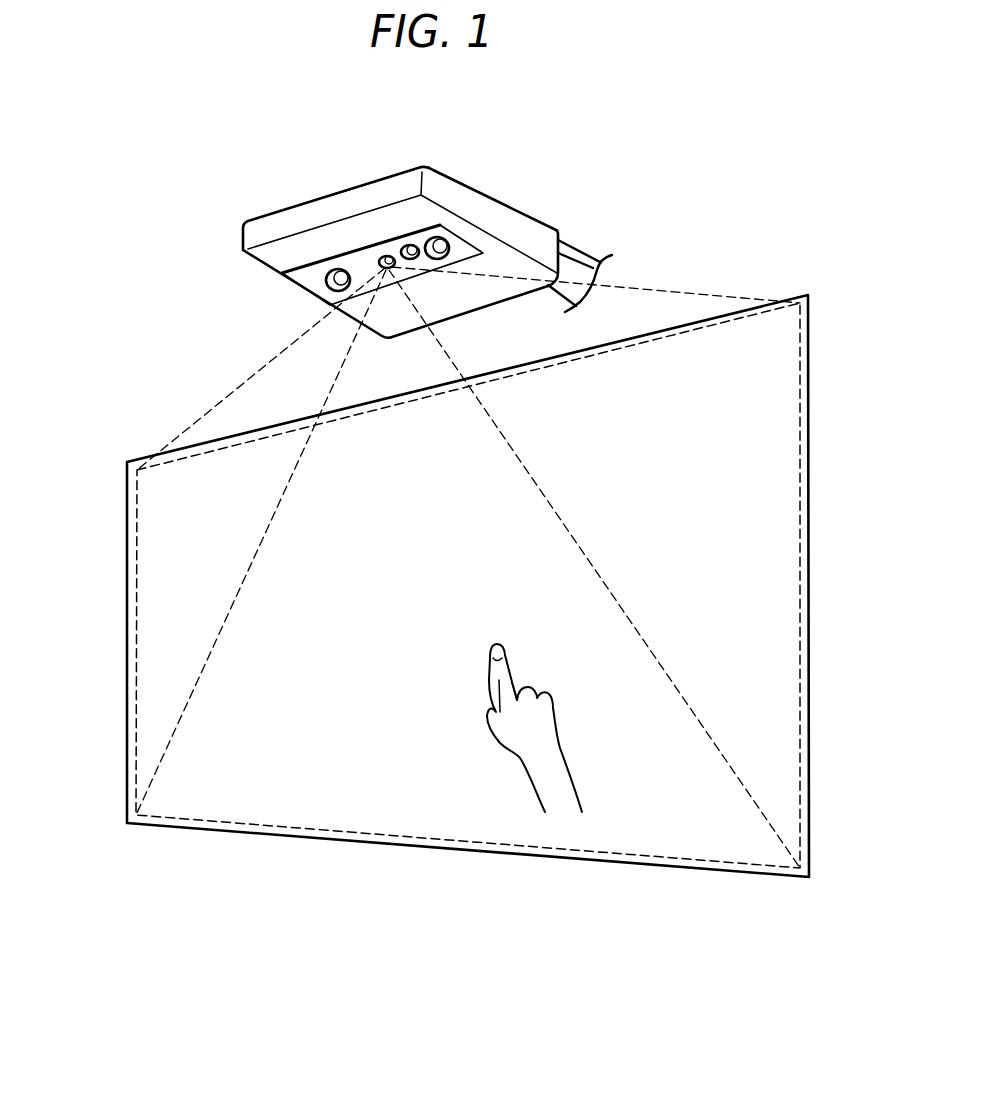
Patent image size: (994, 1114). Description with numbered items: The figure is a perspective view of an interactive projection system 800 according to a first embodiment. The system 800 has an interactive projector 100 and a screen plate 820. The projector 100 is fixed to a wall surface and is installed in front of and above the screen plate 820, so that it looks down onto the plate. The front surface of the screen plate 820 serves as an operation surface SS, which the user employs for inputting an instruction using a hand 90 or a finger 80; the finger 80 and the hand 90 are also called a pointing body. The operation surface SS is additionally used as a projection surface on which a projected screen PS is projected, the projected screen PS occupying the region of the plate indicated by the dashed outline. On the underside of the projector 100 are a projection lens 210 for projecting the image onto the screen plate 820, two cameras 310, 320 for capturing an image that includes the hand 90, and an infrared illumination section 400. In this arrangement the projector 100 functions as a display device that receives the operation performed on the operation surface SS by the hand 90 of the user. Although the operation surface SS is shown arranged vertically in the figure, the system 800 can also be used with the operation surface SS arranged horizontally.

The interactive projection system 800 is at (158, 215).
The interactive projector 100 is at (488, 197).
The projection lens 210 is at (346, 255).
The camera 310 is at (347, 271).
The camera 320 is at (410, 247).
The infrared illumination section 400 is at (383, 258).
The screen plate 820 is at (793, 297).
The projected screen PS is at (135, 517).
The operation surface SS is at (127, 643).
The finger 80 is at (500, 670).
The hand 90 is at (555, 712).